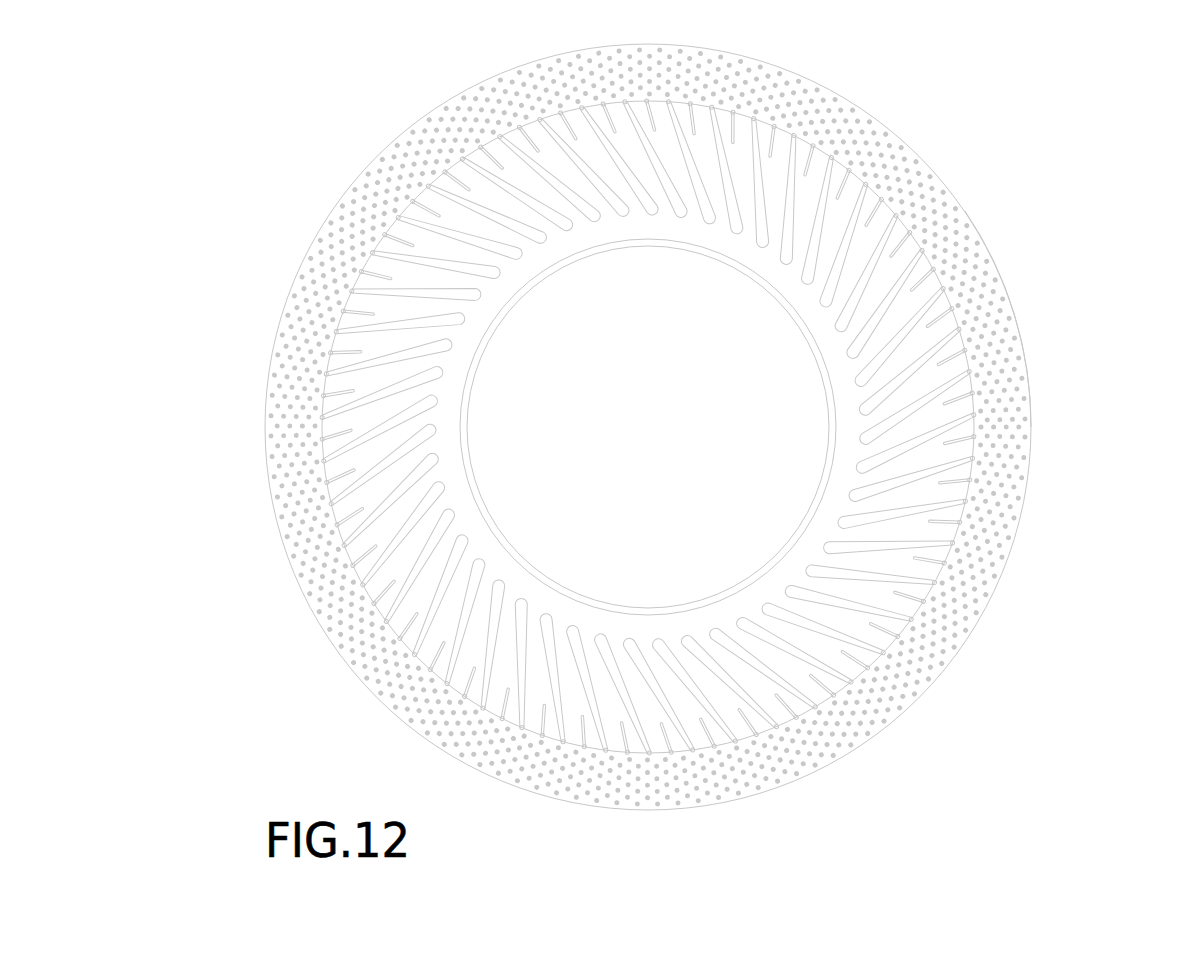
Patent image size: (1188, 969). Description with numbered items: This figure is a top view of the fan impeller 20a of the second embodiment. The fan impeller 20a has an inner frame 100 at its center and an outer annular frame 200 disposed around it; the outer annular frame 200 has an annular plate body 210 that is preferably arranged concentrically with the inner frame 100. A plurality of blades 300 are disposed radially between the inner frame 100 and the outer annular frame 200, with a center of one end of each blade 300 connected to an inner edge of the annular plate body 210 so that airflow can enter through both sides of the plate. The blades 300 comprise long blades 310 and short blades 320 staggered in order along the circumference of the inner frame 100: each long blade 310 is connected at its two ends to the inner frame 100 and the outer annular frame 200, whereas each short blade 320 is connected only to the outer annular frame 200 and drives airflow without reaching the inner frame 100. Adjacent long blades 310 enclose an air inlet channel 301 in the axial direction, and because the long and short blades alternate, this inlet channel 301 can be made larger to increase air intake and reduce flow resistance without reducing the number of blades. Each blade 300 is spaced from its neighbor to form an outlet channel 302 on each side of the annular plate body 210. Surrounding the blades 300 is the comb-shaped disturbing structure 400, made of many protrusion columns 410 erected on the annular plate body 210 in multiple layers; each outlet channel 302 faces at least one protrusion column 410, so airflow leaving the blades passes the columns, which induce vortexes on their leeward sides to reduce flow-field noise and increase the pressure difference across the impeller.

The fan impeller 20a is at (224, 102).
The inner frame 100 is at (847, 385).
The outer annular frame 200 is at (1032, 271).
The annular plate body 210 is at (972, 222).
The blades 300 is at (918, 42).
The air inlet channel 301 is at (866, 598).
The outlet channel 302 is at (927, 618).
The long blade 310 is at (843, 242).
The short blade 320 is at (838, 187).
The disturbing structure 400 is at (1029, 502).
The protrusion column 410 is at (1015, 457).